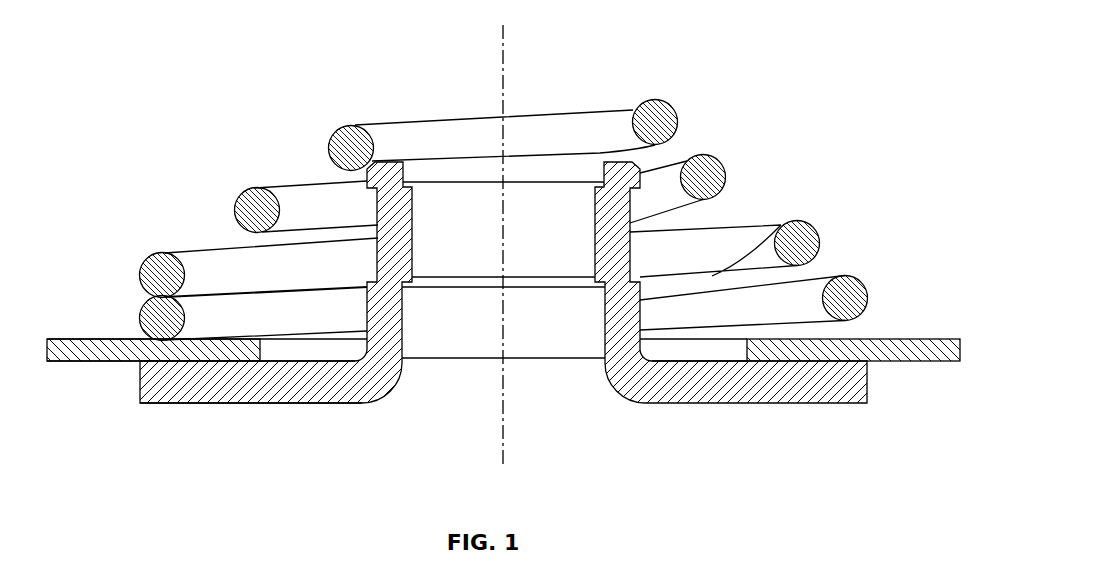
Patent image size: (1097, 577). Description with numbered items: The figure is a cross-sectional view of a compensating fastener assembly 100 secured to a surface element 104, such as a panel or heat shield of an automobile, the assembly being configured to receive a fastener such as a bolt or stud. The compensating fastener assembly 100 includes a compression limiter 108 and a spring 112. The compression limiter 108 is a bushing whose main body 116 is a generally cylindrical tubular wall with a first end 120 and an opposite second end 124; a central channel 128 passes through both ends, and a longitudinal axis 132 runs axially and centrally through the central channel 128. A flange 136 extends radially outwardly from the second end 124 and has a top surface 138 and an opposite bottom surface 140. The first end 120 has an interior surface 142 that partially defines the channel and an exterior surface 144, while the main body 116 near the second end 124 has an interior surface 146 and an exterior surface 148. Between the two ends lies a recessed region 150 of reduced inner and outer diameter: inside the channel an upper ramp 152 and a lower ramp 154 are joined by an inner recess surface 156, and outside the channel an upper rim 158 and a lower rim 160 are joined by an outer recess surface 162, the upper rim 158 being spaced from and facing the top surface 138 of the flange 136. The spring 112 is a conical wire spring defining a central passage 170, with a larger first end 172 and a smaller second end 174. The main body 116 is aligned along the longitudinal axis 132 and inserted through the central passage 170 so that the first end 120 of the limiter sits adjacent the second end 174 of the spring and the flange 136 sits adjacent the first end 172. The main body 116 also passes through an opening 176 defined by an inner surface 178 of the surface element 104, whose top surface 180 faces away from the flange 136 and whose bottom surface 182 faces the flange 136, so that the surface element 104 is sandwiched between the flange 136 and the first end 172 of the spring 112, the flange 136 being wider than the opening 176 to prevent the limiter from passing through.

The compensating fastener assembly 100 is at (138, 36).
The surface element 104 is at (78, 352).
The compression limiter 108 is at (787, 380).
The spring 112 is at (303, 198).
The main body 116 is at (638, 377).
The first end 120 is at (615, 165).
The second end 124 is at (620, 318).
The central channel 128 is at (411, 425).
The longitudinal axis 132 is at (503, 37).
The flange 136 is at (183, 387).
The top surface 138 is at (322, 362).
The bottom surface 140 is at (238, 403).
The interior surface 142 is at (423, 170).
The exterior surface 144 is at (363, 177).
The interior surface 146 is at (445, 314).
The exterior surface 148 is at (778, 220).
The recessed region 150 is at (541, 196).
The upper ramp 152 is at (567, 190).
The lower ramp 154 is at (510, 286).
The inner recess surface 156 is at (533, 264).
The upper rim 158 is at (683, 158).
The lower rim 160 is at (568, 286).
The outer recess surface 162 is at (724, 172).
The central passage 170 is at (603, 105).
The first end 172 is at (857, 292).
The second end 174 is at (403, 117).
The opening 176 is at (281, 337).
The inner surface 178 is at (277, 352).
The top surface 180 is at (118, 338).
The bottom surface 182 is at (98, 362).